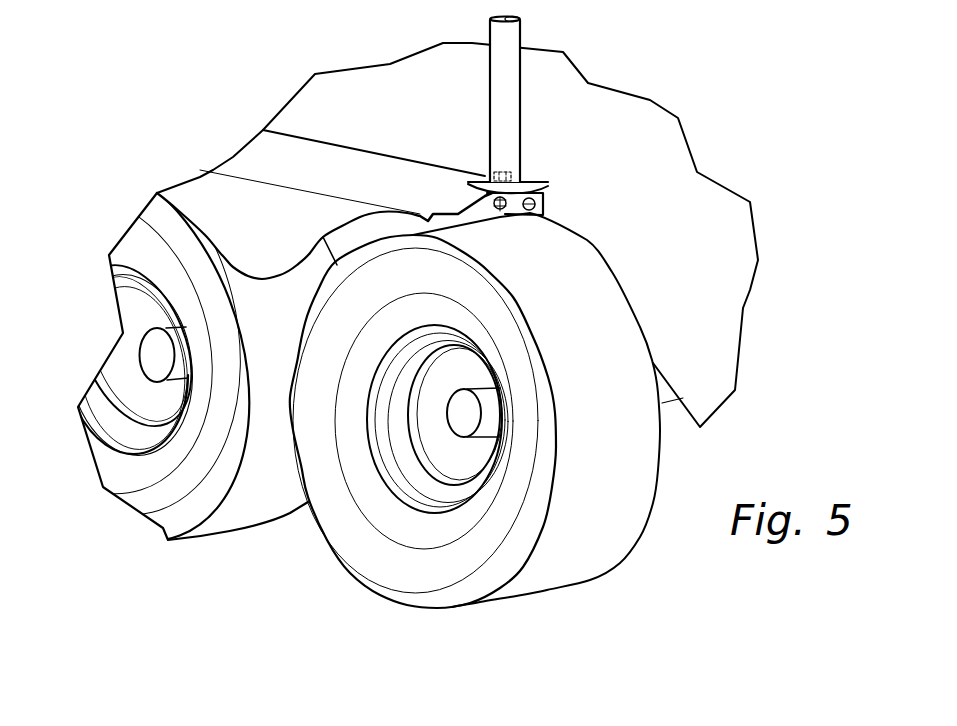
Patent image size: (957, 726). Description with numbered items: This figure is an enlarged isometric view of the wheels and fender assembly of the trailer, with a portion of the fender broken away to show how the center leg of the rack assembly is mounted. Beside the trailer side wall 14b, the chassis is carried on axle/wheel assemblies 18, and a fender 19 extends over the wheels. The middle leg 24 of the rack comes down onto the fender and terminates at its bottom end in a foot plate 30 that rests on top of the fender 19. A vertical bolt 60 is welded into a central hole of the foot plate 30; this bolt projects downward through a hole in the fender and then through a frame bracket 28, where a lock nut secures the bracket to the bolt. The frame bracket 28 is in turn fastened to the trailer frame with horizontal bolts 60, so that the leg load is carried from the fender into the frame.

The side wall 14b is at (650, 162).
The fender 19 is at (200, 195).
The axle/wheel assembly 18 is at (288, 332).
The middle leg 24 is at (514, 63).
The foot plate 30 is at (487, 181).
The frame bracket 28 is at (547, 193).
The bolt 60 is at (512, 173).